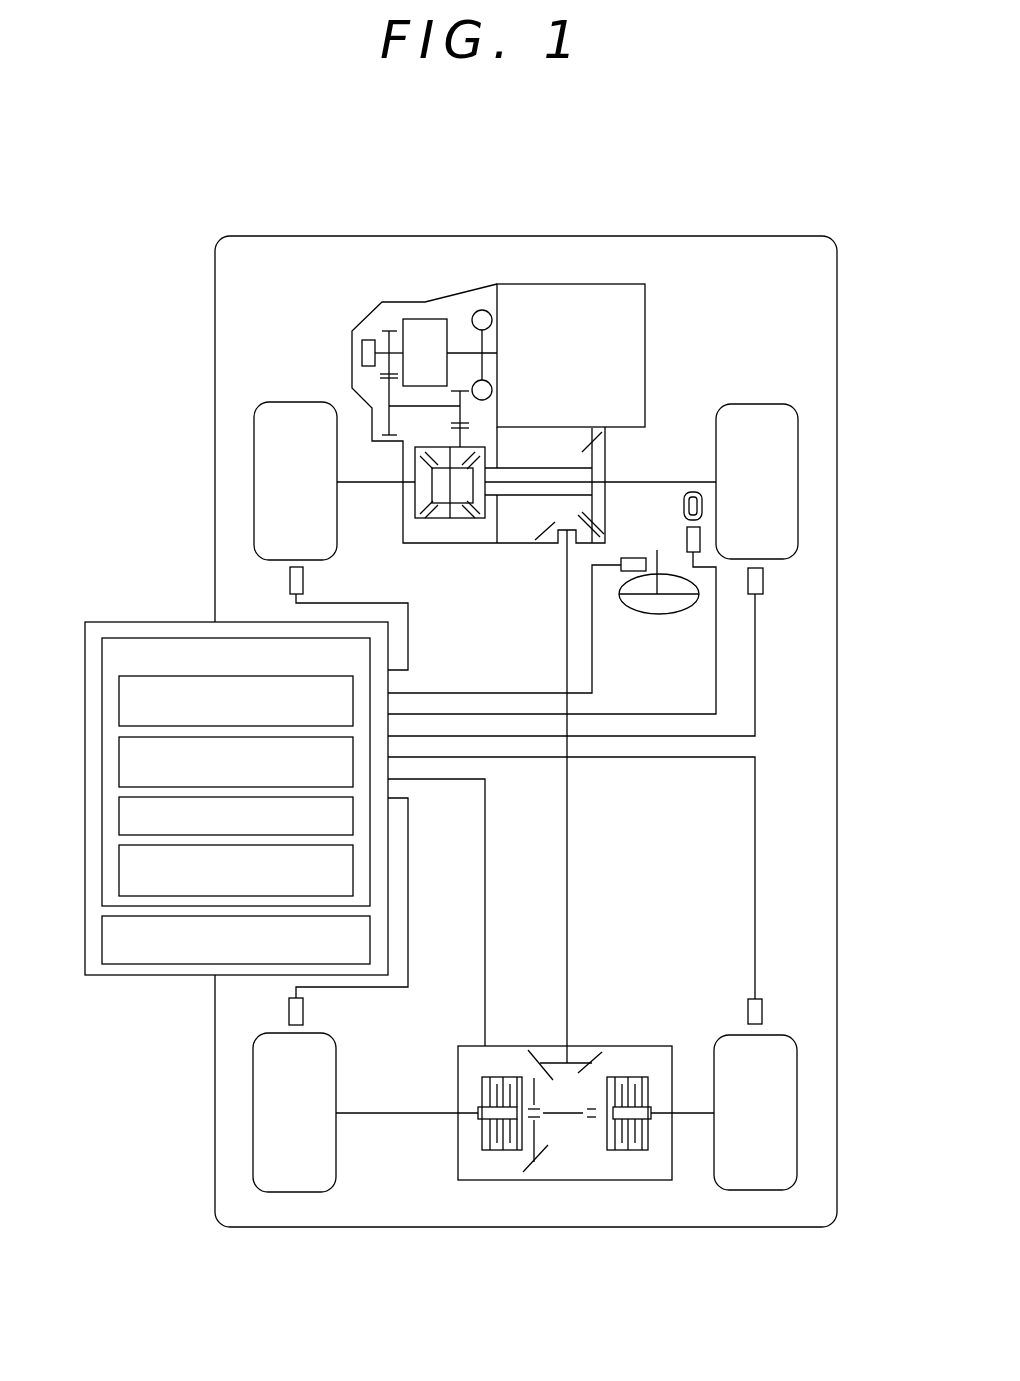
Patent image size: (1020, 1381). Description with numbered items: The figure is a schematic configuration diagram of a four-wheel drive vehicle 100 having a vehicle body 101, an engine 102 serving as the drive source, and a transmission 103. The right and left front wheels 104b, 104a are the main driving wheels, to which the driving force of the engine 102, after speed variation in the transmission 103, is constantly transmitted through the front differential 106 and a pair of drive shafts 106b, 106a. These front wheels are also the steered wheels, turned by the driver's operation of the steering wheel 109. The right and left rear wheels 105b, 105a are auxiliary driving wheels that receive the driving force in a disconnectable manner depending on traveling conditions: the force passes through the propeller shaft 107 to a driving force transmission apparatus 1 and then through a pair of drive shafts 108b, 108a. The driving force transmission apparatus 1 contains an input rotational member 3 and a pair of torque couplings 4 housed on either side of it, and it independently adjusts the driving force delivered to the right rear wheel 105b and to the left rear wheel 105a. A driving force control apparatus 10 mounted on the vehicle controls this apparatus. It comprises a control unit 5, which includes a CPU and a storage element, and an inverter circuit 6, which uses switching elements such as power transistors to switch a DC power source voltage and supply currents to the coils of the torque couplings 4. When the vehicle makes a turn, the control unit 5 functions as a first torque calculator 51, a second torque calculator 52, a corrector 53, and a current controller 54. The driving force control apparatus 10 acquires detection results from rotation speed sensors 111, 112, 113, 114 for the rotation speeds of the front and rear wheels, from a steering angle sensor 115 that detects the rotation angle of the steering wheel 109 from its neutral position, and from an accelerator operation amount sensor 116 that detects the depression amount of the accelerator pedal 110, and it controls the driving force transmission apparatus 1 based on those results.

The four-wheel drive vehicle 100 is at (256, 214).
The vehicle body 101 is at (719, 236).
The engine 102 is at (600, 282).
The transmission 103 is at (444, 314).
The left front wheel 104a is at (253, 458).
The right front wheel 104b is at (798, 460).
The left rear wheel 105a is at (253, 1108).
The right rear wheel 105b is at (797, 1098).
The front differential 106 is at (432, 522).
The drive shaft 106a is at (375, 483).
The drive shaft 106b is at (668, 481).
The propeller shaft 107 is at (568, 970).
The drive shaft 108a is at (384, 1108).
The drive shaft 108b is at (697, 1108).
The steering wheel 109 is at (656, 614).
The accelerator pedal 110 is at (703, 505).
The rotation speed sensor 111 is at (290, 580).
The rotation speed sensor 112 is at (764, 580).
The rotation speed sensor 113 is at (288, 1012).
The rotation speed sensor 114 is at (763, 1012).
The steering angle sensor 115 is at (634, 558).
The accelerator operation amount sensor 116 is at (703, 541).
The driving force control apparatus 10 is at (206, 776).
The control unit 5 is at (197, 758).
The first torque calculator 51 is at (118, 685).
The second torque calculator 52 is at (118, 752).
The corrector 53 is at (118, 815).
The current controller 54 is at (118, 862).
The inverter circuit 6 is at (102, 933).
The driving force transmission apparatus 1 is at (560, 1170).
The input rotational member 3 is at (575, 1156).
The torque coupling 4 is at (491, 1156).